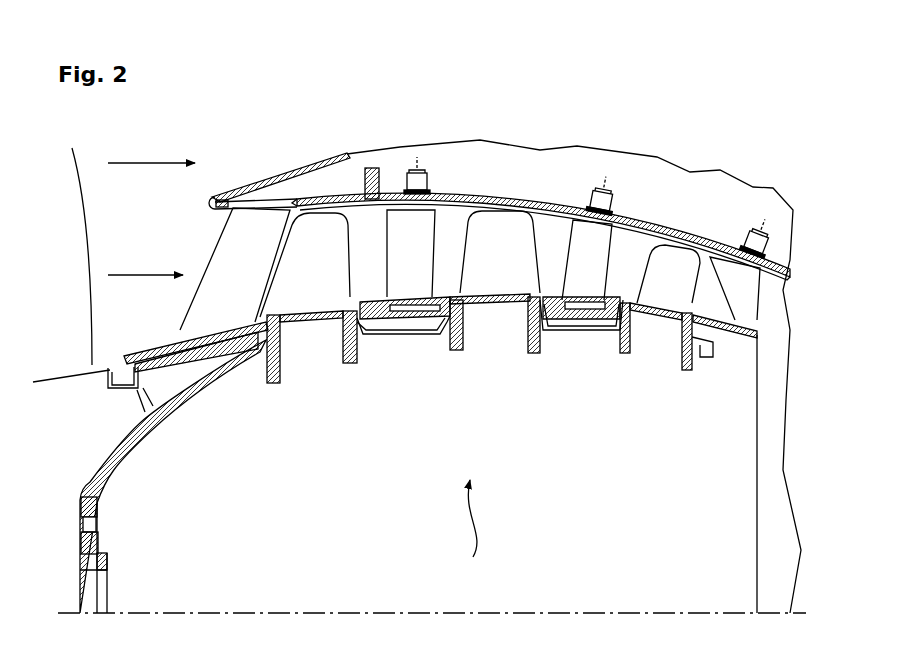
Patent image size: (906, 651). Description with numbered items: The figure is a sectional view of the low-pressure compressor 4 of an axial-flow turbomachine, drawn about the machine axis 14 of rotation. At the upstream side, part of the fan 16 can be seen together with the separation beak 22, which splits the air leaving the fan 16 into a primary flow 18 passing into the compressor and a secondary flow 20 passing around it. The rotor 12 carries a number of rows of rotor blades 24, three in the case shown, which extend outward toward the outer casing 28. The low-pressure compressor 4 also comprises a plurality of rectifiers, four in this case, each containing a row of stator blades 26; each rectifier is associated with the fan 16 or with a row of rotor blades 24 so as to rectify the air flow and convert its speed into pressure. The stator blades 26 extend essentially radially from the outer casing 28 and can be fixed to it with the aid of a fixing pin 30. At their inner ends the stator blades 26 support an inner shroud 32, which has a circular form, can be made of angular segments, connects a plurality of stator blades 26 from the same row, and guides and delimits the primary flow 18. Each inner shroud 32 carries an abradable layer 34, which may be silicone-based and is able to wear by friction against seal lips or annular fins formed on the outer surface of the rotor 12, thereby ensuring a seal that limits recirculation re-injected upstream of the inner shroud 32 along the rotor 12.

The low-pressure compressor 4 is at (474, 531).
The rotor 12 is at (100, 497).
The machine axis 14 is at (290, 612).
The fan 16 is at (36, 279).
The primary flow 18 is at (145, 261).
The secondary flow 20 is at (151, 150).
The separation beak 22 is at (207, 205).
The rotor blades 24 is at (308, 275).
The stator blades 26 is at (218, 281).
The outer casing 28 is at (503, 196).
The fixing pin 30 is at (421, 193).
The inner shroud 32 is at (166, 345).
The abradable layer 34 is at (220, 362).